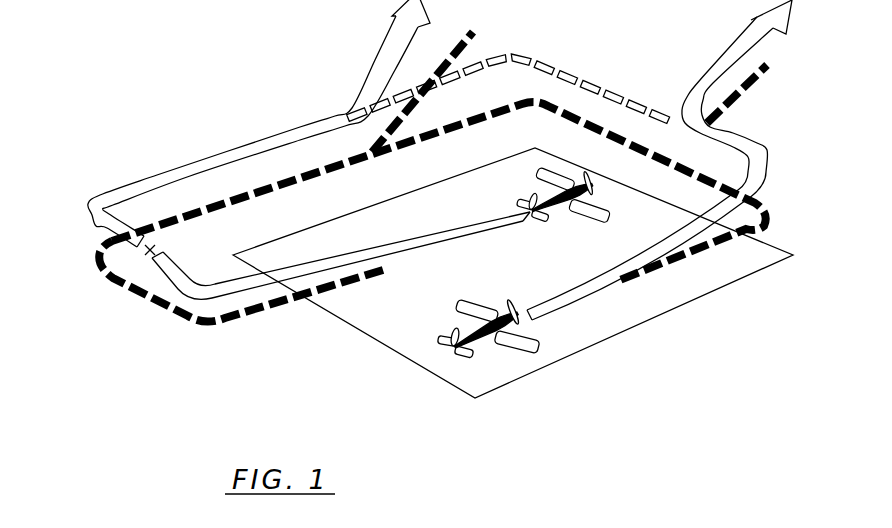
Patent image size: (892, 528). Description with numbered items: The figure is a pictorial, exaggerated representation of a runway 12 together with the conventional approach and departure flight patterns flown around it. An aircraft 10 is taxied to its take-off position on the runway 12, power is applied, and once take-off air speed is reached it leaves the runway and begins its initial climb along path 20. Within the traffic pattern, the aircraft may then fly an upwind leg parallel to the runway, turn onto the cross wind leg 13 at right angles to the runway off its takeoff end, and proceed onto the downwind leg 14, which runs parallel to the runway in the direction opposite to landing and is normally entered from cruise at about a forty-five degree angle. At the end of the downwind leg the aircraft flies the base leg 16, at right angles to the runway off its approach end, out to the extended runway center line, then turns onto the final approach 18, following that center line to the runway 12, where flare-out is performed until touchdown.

The aircraft 10 is at (543, 177).
The runway 12 is at (613, 325).
The cross wind leg 13 is at (573, 72).
The downwind leg 14 is at (242, 153).
The base leg 16 is at (118, 229).
The final approach 18 is at (328, 270).
The initial climb path 20 is at (682, 228).